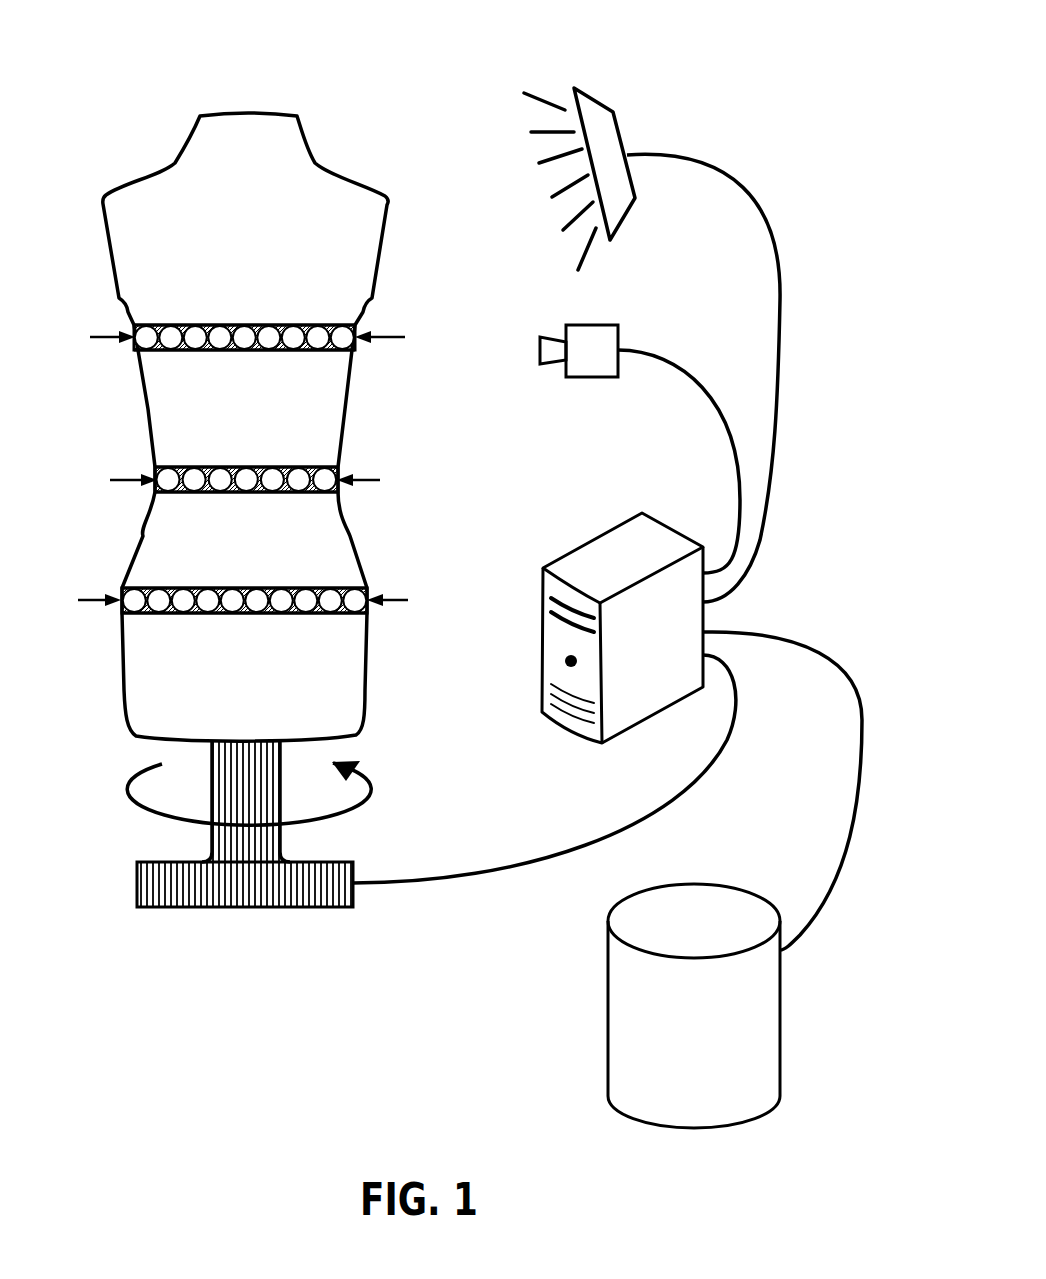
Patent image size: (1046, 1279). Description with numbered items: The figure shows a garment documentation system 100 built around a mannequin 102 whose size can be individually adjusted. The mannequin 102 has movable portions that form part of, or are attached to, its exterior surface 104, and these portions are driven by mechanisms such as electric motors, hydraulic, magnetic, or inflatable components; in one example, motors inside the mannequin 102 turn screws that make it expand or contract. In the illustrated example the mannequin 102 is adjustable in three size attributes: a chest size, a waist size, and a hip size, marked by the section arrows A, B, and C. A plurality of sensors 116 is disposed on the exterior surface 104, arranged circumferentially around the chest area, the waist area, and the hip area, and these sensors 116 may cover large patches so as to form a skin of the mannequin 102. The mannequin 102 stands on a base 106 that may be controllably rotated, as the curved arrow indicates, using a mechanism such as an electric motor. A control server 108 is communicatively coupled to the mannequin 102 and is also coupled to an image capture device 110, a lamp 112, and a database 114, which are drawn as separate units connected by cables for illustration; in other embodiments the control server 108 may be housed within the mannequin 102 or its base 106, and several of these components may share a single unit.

The garment documentation system 100 is at (128, 48).
The mannequin 102 is at (256, 388).
The exterior surface 104 is at (282, 427).
The base 106 is at (201, 845).
The control server 108 is at (600, 623).
The image capture device 110 is at (542, 324).
The lamp 112 is at (631, 159).
The database 114 is at (636, 1006).
The sensors 116 is at (222, 335).